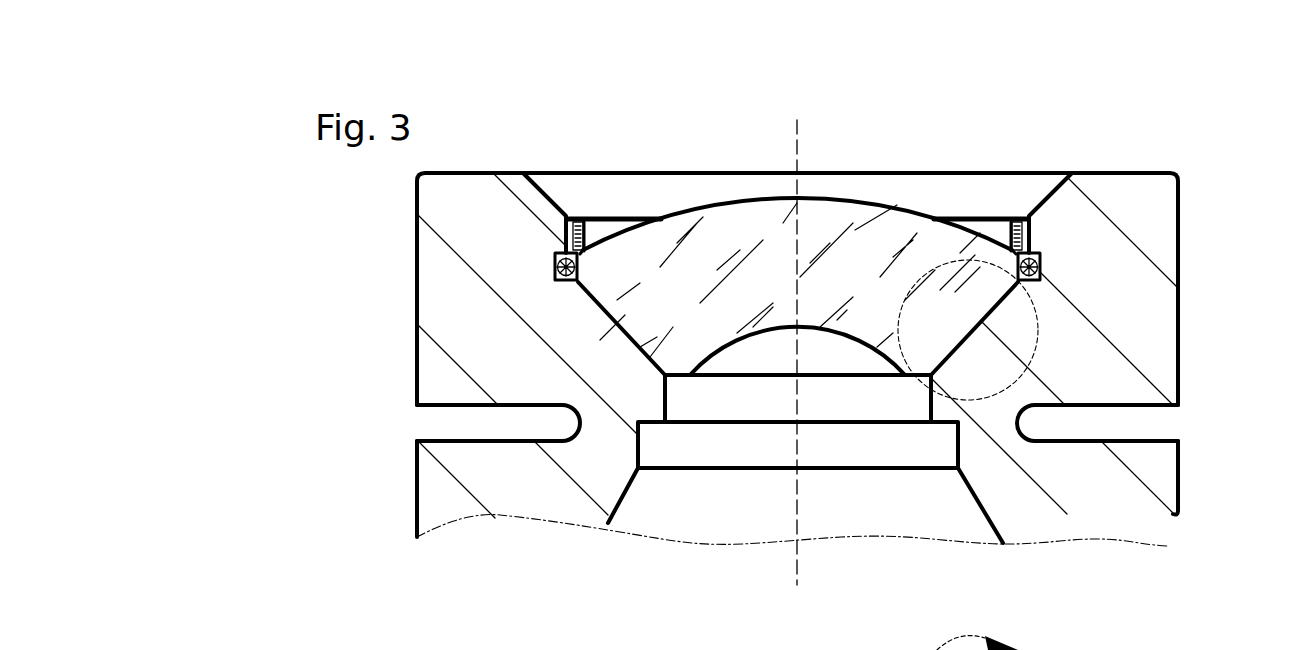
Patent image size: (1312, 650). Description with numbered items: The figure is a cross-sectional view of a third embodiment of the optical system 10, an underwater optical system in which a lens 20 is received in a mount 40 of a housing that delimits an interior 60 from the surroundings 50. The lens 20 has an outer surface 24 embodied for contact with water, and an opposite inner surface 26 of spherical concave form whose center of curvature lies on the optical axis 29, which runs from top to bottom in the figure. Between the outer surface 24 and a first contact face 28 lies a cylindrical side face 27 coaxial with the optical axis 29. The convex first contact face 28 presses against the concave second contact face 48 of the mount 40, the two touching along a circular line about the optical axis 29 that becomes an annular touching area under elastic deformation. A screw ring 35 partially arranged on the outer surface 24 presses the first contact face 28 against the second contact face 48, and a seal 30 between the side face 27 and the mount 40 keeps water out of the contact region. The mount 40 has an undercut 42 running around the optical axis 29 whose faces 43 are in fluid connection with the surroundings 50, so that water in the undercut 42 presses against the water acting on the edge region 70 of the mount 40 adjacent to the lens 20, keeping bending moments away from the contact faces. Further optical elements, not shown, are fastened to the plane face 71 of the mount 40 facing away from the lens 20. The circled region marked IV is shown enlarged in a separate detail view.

The optical system 10 is at (347, 297).
The lens 20 is at (983, 313).
The outer surface 24 is at (900, 205).
The inner surface 26 is at (768, 345).
The side face 27 is at (572, 286).
The first contact face 28 is at (630, 362).
The optical axis 29 is at (797, 130).
The seal 30 is at (566, 217).
The screw ring 35 is at (575, 222).
The mount 40 is at (452, 296).
The undercut 42 is at (410, 426).
The faces of the undercut 43 is at (497, 407).
The second contact face 48 is at (607, 308).
The surroundings 50 is at (1060, 145).
The interior 60 is at (877, 524).
The edge region 70 is at (510, 173).
The plane face 71 is at (657, 424).
The detail IV is at (990, 400).